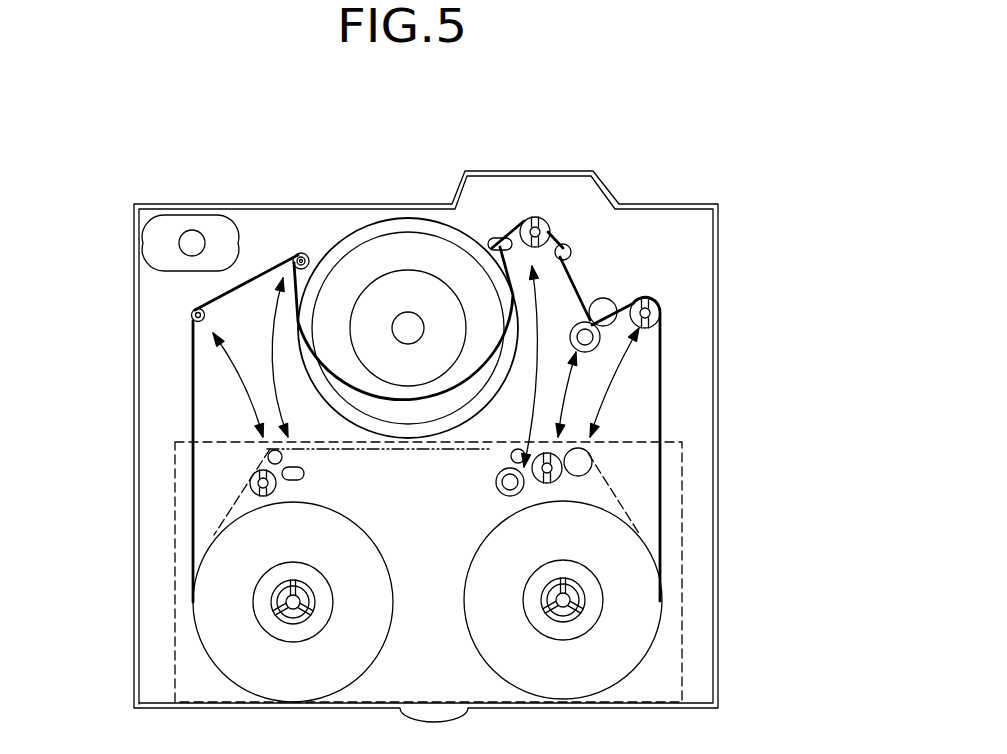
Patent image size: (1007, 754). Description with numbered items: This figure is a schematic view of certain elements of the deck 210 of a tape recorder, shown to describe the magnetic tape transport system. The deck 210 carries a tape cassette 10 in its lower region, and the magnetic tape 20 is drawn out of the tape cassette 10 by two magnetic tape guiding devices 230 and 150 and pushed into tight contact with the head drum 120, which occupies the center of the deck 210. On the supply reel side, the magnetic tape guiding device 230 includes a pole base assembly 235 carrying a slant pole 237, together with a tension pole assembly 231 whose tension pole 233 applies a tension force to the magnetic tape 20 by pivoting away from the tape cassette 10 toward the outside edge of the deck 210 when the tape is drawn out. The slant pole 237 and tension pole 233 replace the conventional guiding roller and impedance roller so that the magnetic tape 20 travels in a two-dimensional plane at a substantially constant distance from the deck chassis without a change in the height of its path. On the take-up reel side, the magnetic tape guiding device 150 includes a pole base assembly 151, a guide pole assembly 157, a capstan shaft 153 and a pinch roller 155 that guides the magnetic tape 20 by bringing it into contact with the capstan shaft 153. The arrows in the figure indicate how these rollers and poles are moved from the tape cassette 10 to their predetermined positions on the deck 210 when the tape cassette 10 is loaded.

The tape cassette 10 is at (183, 572).
The magnetic tape 20 is at (192, 423).
The head drum 120 is at (437, 222).
The take-up reel magnetic tape guiding device 150 is at (705, 118).
The pole base assembly 151 is at (529, 207).
The capstan shaft 153 is at (603, 298).
The pinch roller 155 is at (576, 324).
The guide pole assembly 157 is at (641, 297).
The deck 210 is at (731, 465).
The magnetic tape guiding device 230 is at (270, 118).
The tension pole assembly 231 is at (191, 300).
The tension pole 233 is at (193, 318).
The pole base assembly 235 is at (290, 247).
The slant pole 237 is at (303, 253).